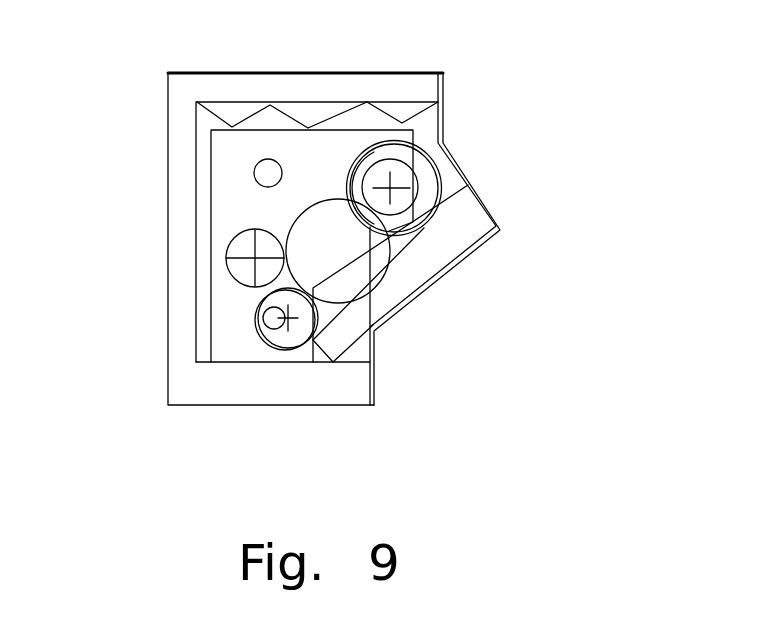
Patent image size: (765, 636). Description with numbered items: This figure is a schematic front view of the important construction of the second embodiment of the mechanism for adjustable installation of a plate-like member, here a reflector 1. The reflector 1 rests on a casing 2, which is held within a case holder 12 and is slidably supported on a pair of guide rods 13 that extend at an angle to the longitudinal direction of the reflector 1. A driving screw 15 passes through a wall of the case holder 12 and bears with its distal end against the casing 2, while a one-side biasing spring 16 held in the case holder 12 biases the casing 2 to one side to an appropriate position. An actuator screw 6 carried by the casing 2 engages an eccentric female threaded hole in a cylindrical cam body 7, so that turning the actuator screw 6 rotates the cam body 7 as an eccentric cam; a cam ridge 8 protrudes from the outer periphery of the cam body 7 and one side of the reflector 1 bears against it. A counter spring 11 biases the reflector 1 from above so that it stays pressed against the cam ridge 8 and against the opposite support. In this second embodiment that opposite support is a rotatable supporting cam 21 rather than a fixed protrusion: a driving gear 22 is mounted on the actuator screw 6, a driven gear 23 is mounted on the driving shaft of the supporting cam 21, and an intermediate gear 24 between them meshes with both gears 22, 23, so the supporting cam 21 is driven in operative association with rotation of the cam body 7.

The reflector 1 is at (378, 316).
The casing 2 is at (223, 192).
The actuator screw 6 is at (394, 167).
The cylindrical cam body 7 is at (426, 186).
The cam ridge 8 is at (404, 228).
The counter spring 11 is at (498, 228).
The case holder 12 is at (176, 385).
The guide rods 13 is at (263, 172).
The driving screw 15 is at (226, 259).
The one-side biasing spring 16 is at (290, 118).
The supporting cam 21 is at (282, 338).
The driving gear 22 is at (418, 173).
The driven gear 23 is at (272, 337).
The intermediate gear 24 is at (310, 236).